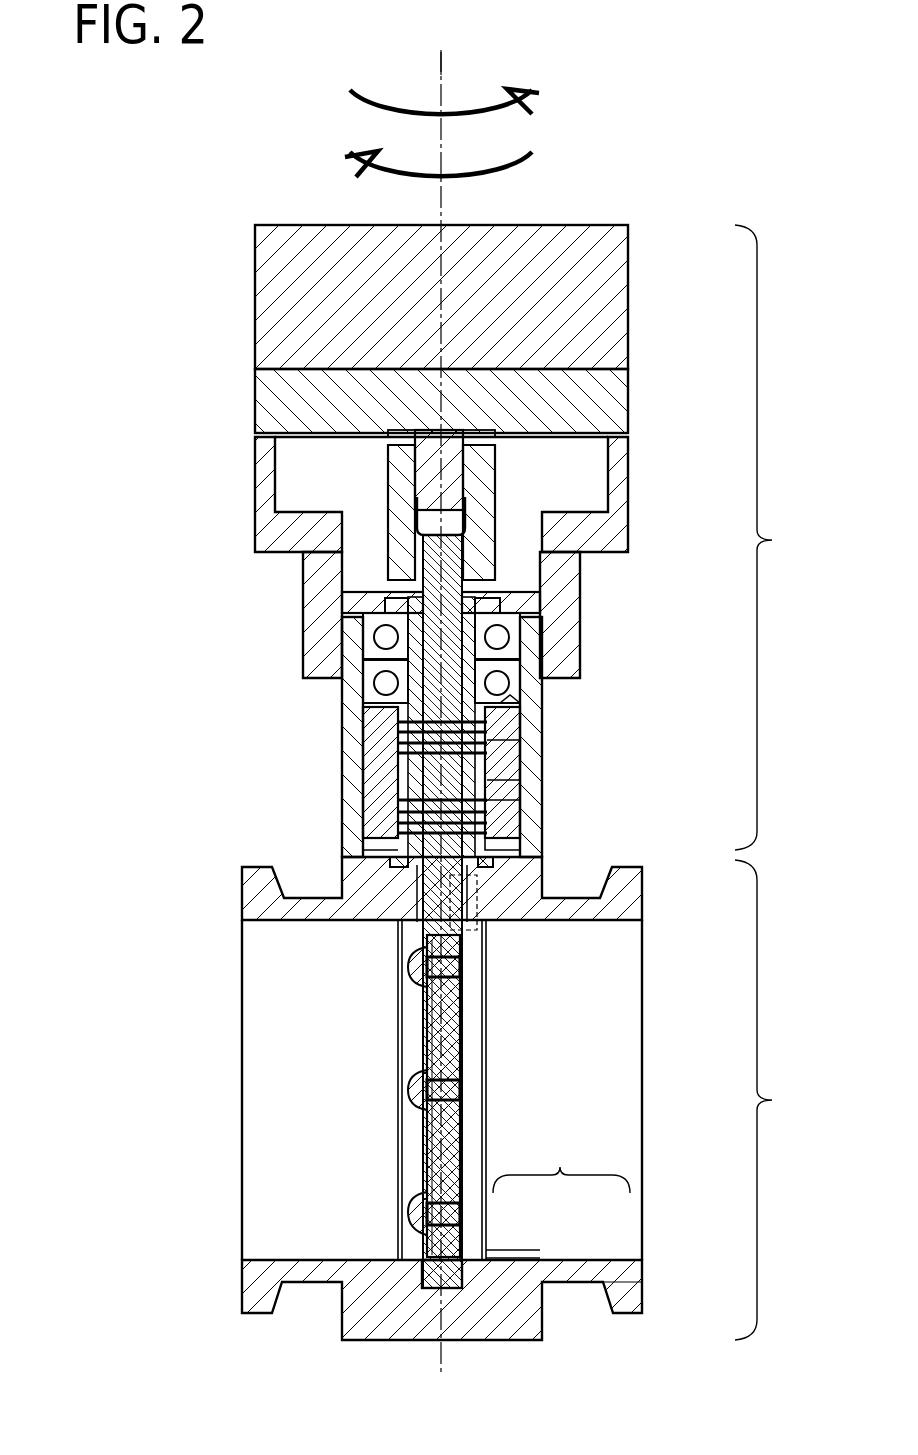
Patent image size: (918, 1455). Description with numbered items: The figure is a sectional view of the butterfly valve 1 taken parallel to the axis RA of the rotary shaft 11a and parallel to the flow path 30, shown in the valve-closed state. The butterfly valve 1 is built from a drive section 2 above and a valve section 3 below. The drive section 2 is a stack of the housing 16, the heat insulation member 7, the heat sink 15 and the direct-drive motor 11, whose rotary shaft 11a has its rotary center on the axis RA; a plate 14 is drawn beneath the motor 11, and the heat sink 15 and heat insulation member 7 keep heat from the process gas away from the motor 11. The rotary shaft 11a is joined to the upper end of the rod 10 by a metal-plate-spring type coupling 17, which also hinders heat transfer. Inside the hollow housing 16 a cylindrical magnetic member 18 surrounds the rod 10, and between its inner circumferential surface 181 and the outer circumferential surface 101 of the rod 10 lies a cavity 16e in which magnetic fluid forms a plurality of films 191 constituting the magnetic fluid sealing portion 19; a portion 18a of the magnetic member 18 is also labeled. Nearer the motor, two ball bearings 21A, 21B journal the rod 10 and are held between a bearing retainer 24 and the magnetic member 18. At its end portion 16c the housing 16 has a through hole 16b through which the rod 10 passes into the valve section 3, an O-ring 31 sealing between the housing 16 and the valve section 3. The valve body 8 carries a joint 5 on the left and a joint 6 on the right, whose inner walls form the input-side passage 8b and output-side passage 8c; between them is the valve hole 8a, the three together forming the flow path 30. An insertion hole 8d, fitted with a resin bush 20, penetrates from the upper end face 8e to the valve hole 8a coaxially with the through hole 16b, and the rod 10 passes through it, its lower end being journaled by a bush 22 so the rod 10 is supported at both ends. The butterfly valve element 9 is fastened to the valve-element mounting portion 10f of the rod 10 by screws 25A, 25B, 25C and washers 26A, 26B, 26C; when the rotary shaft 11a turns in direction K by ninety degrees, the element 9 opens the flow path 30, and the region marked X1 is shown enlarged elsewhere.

The butterfly valve 1 is at (200, 159).
The drive section 2 is at (763, 537).
The valve section 3 is at (516, 1100).
The joint 5 is at (254, 1292).
The joint 6 is at (633, 1296).
The heat insulation member 7 is at (322, 595).
The valve body 8 is at (233, 890).
The valve hole 8a is at (545, 1258).
The input-side passage 8b is at (462, 1245).
The output-side passage 8c is at (552, 1254).
The insertion hole 8d is at (385, 890).
The upper end face 8e is at (390, 862).
The butterfly valve element 9 is at (430, 1027).
The rod 10 is at (352, 700).
The valve-element mounting portion 10f is at (432, 1058).
The direct-drive motor 11 is at (272, 296).
The rotary shaft 11a is at (430, 475).
The plate 14 is at (275, 410).
The heat sink 15 is at (268, 506).
The housing 16 is at (378, 752).
The through hole 16b is at (498, 870).
The end portion 16c is at (522, 852).
The cavity 16e is at (522, 712).
The coupling 17 is at (400, 527).
The magnetic member 18 is at (500, 790).
The electrode portion 18a is at (500, 762).
The inner circumferential surface 181 is at (490, 726).
The magnetic fluid sealing portion 19 is at (398, 833).
The films 191 is at (398, 754).
The bush 20 is at (400, 926).
The ball bearing 21A is at (505, 640).
The ball bearing 21B is at (505, 686).
The bush 22 is at (422, 1272).
The bearing retainer 24 is at (535, 600).
The screw 25A is at (425, 972).
The screw 25B is at (425, 1095).
The screw 25C is at (425, 1212).
The washer 26A is at (412, 950).
The washer 26B is at (412, 1073).
The washer 26C is at (412, 1192).
The flow path 30 is at (561, 1163).
The O-ring 31 is at (372, 838).
The outer circumferential surface 101 is at (500, 812).
The axis RA is at (441, 62).
The forward direction K is at (535, 112).
The part X1 is at (482, 905).